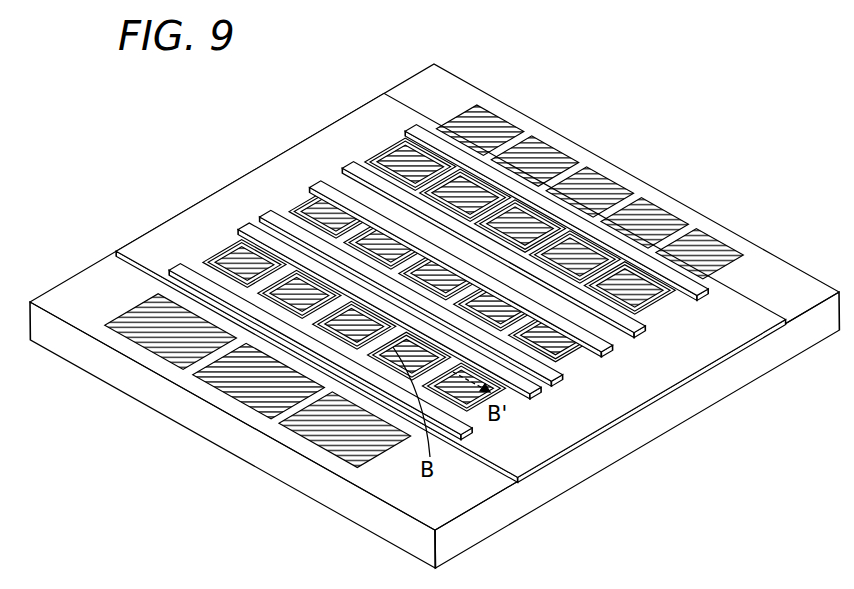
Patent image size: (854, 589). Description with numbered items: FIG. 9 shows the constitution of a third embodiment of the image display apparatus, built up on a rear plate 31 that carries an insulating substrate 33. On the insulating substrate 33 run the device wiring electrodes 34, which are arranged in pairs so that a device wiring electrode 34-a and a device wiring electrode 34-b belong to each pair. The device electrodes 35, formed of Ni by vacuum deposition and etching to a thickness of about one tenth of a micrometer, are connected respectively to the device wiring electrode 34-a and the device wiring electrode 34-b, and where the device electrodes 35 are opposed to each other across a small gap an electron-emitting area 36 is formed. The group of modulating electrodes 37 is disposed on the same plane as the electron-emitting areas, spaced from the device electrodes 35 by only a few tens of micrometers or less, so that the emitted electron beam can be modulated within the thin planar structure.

The rear plate 31 is at (761, 358).
The insulating substrate 33 is at (700, 355).
The device wiring electrode 34 is at (472, 195).
The device wiring electrode 34-a is at (417, 131).
The device wiring electrode 34-b is at (353, 165).
The device electrode 35 is at (530, 213).
The electron-emitting area 36 is at (612, 263).
The group of modulating electrodes 37 is at (642, 258).